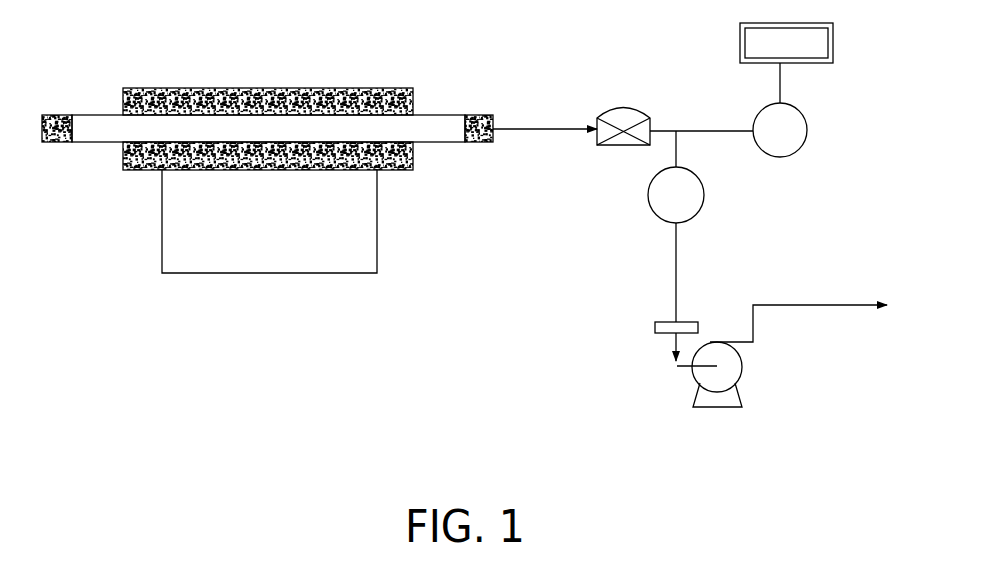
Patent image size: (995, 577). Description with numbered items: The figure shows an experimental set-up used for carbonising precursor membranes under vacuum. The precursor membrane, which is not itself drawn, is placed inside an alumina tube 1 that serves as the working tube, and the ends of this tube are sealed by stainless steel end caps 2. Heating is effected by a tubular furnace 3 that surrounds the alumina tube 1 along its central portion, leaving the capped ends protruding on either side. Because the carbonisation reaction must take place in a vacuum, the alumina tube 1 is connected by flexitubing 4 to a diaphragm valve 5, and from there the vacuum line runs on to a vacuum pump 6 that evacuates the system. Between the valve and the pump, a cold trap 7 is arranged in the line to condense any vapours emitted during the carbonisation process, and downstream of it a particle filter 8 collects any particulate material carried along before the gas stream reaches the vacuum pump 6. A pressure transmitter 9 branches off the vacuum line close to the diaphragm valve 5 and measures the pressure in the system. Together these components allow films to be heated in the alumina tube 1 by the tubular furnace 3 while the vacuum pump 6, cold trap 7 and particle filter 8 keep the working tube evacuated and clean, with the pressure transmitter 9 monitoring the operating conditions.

The alumina tube 1 is at (268, 128).
The stainless steel end caps 2 is at (67, 110).
The tubular furnace 3 is at (268, 180).
The flexitubing 4 is at (545, 120).
The diaphragm valve 5 is at (623, 112).
The vacuum pump 6 is at (782, 356).
The cold trap 7 is at (662, 195).
The particle filter 8 is at (664, 327).
The pressure transmitter 9 is at (786, 90).